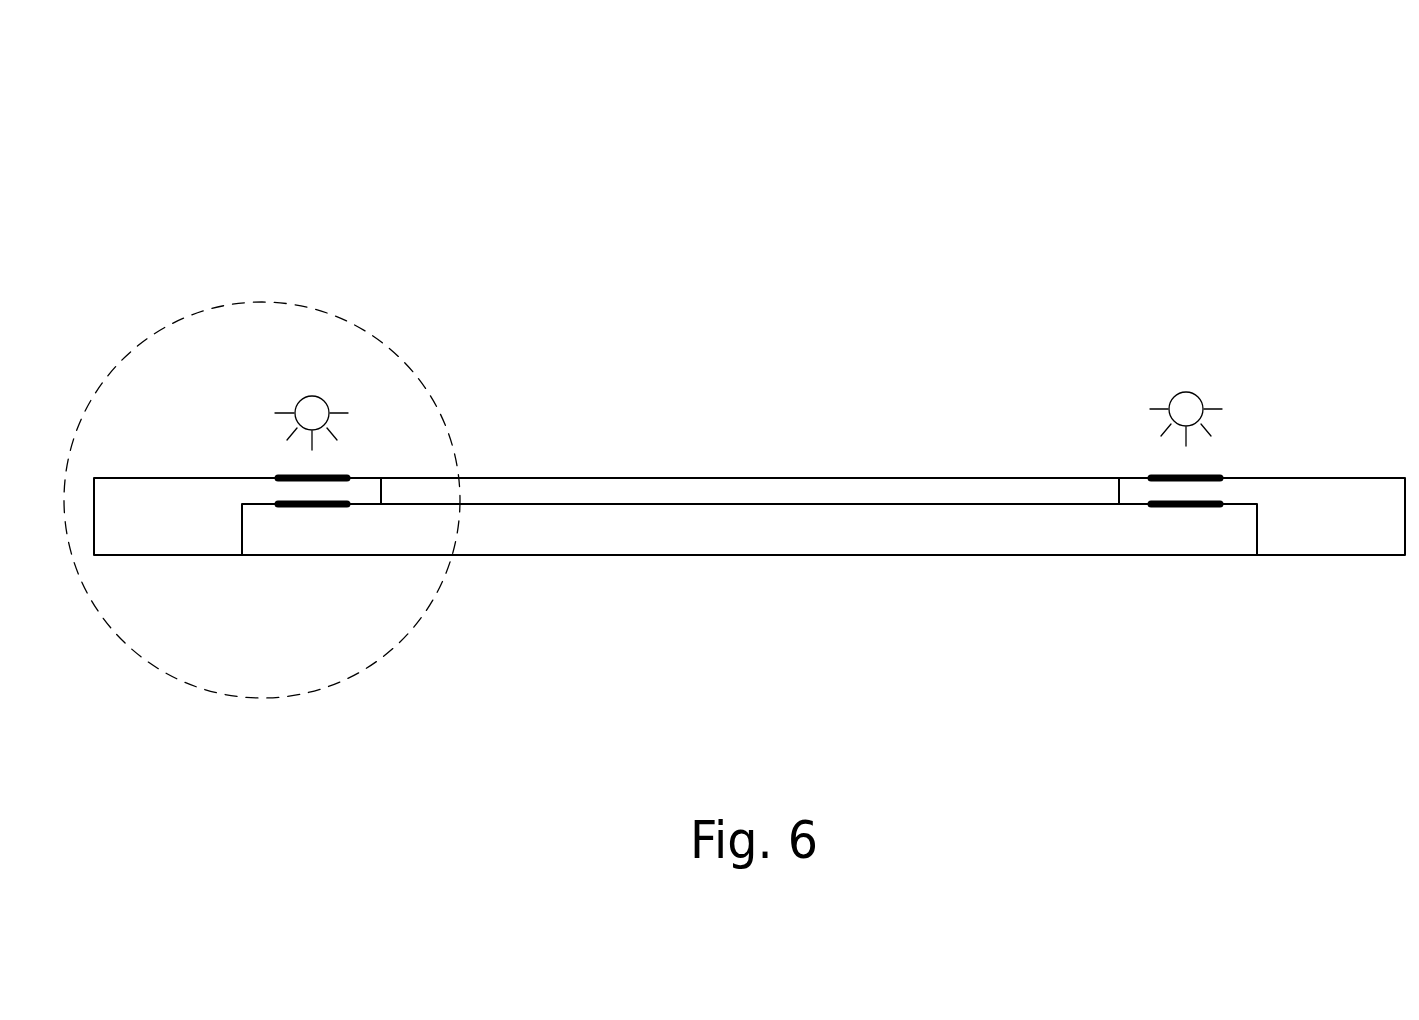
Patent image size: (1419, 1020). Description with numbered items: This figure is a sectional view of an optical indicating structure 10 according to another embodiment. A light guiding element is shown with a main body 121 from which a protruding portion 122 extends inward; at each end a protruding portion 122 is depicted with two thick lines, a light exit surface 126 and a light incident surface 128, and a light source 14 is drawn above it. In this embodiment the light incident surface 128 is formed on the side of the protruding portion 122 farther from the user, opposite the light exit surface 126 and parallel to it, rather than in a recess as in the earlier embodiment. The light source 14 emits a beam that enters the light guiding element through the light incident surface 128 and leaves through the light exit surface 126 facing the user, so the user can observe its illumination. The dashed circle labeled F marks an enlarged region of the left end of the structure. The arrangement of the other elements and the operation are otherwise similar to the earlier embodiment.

The optical indicating structure 10 is at (222, 103).
The light source 14 is at (312, 413).
The main body 121 is at (1318, 535).
The protruding portion 122 is at (1132, 490).
The light exit surface 126 is at (312, 505).
The light incident surface 128 is at (337, 476).
The enlarged region F is at (455, 452).